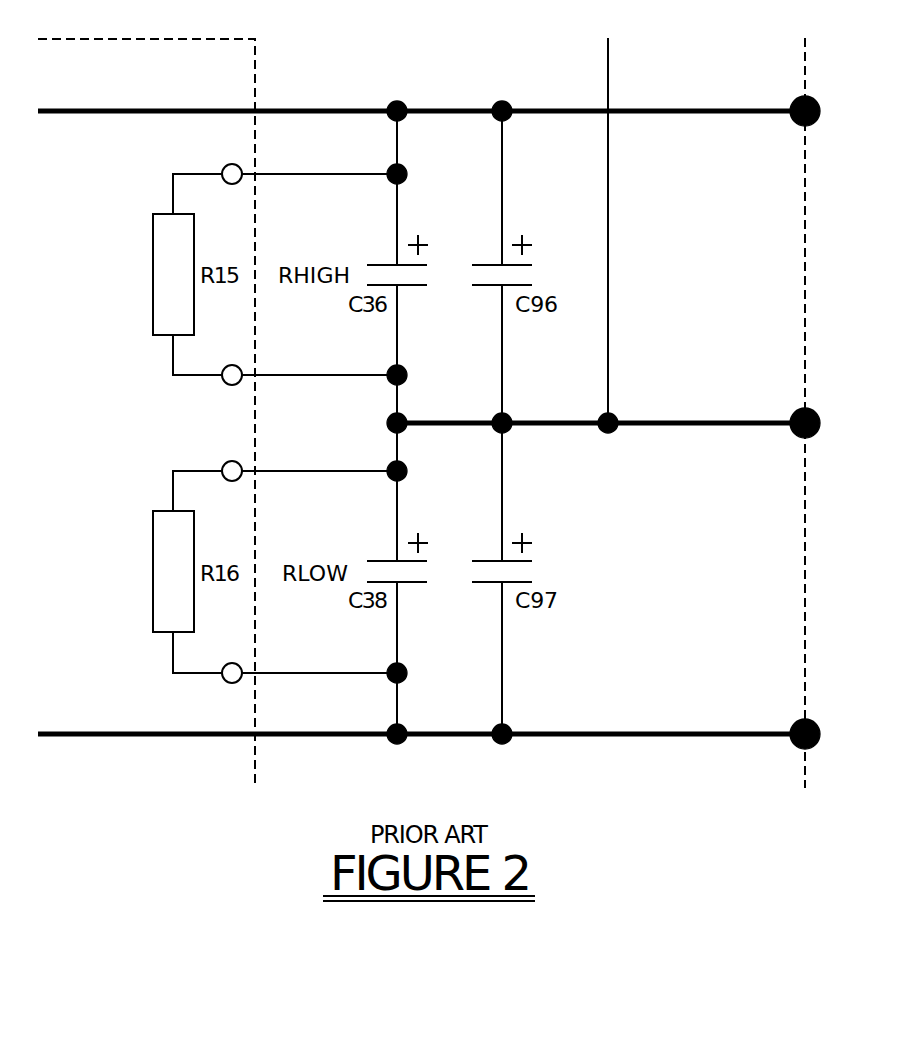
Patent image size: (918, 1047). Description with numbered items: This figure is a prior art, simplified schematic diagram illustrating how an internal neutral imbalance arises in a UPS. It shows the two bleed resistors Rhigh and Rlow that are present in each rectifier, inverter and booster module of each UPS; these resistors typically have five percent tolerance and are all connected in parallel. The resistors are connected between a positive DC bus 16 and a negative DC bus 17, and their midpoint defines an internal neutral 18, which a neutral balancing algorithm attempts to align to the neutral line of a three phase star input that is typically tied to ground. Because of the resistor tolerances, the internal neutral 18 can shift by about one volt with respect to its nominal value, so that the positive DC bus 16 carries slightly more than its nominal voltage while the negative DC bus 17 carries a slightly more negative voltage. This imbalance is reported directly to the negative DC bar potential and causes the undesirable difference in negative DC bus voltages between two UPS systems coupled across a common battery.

The positive DC bus Vdc+ 16 is at (429, 114).
The negative DC bus Vdc- 17 is at (429, 736).
The neutral bus N 18 is at (603, 425).